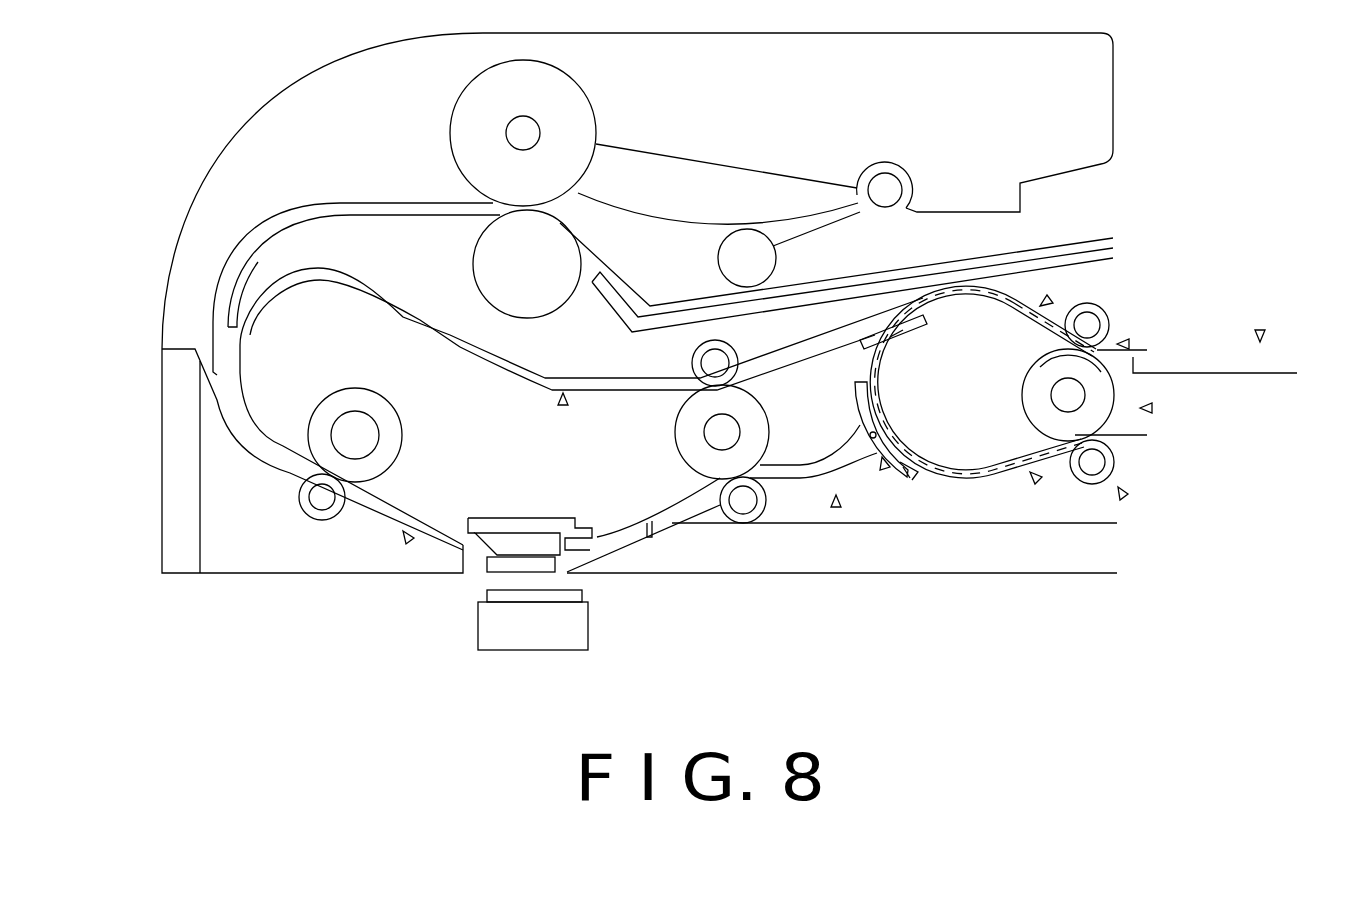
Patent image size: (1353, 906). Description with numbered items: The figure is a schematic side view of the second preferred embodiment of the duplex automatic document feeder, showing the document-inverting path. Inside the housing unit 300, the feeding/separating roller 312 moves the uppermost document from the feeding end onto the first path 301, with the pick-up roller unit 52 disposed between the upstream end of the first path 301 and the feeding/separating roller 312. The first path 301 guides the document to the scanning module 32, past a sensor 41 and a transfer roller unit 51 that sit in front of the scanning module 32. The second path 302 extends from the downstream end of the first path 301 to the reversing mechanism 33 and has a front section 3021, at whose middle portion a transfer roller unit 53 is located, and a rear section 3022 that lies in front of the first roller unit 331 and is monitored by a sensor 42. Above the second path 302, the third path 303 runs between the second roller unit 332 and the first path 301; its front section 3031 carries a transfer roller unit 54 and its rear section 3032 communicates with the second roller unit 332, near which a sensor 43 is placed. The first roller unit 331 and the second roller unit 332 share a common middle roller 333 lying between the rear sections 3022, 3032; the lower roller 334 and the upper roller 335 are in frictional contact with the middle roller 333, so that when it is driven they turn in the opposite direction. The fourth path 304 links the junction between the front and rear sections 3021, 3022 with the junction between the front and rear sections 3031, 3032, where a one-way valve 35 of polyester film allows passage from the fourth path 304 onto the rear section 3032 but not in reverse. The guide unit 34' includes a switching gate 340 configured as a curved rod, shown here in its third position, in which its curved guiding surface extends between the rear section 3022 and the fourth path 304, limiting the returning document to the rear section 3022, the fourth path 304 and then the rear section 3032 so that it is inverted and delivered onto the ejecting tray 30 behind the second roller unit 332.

The ejecting tray 30 is at (1260, 332).
The housing unit 300 is at (183, 483).
The first path 301 is at (218, 376).
The second path 302 is at (838, 505).
The front section 3021 is at (673, 517).
The rear section 3022 is at (993, 473).
The third path 303 is at (563, 405).
The front section 3031 is at (407, 317).
The rear section 3032 is at (973, 297).
The fourth path 304 is at (860, 375).
The feeding/separating roller 312 is at (740, 260).
The scanning module 32 is at (525, 617).
The reversing mechanism 33 is at (1152, 408).
The first roller unit 331 is at (1124, 497).
The second roller unit 332 is at (1129, 344).
The middle roller 333 is at (1100, 416).
The lower roller 334 is at (1108, 462).
The upper roller 335 is at (1104, 310).
The guide unit 34' is at (912, 539).
The switching gate 340 is at (908, 473).
The one-way valve 35 is at (907, 336).
The sensor 41 is at (408, 541).
The sensor 42 is at (1039, 480).
The sensor 43 is at (1052, 300).
The transfer roller unit 51 is at (305, 502).
The pick-up roller unit 52 is at (475, 123).
The transfer roller unit 53 is at (757, 515).
The transfer roller unit 54 is at (697, 375).